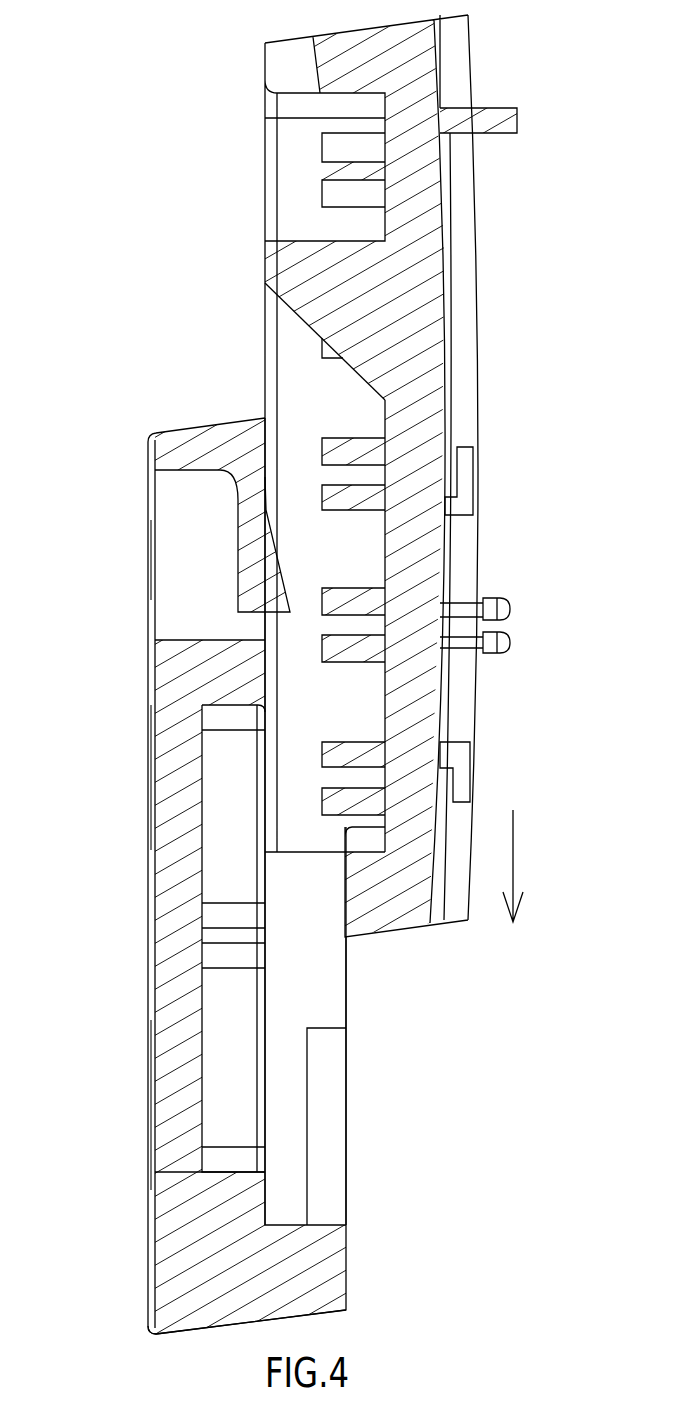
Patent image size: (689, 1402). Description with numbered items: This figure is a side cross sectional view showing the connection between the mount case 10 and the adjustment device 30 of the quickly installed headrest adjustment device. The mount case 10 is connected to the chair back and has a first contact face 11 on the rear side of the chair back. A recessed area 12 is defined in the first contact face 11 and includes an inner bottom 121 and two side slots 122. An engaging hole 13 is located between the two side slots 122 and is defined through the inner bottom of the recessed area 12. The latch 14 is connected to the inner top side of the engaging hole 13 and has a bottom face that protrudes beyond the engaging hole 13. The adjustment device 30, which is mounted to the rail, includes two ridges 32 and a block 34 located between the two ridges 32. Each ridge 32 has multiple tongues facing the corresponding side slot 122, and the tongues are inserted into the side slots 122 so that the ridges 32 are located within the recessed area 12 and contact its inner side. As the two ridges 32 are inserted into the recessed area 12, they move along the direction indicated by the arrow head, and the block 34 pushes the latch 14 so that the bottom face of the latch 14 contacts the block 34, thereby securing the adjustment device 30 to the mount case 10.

The mount case 10 is at (147, 914).
The first contact face 11 is at (347, 1268).
The recessed area 12 is at (312, 958).
The inner bottom 121 is at (268, 1180).
The side slots 122 is at (295, 1012).
The engaging hole 13 is at (172, 610).
The latch 14 is at (244, 549).
The adjustment device 30 is at (478, 298).
The ridges 32 is at (274, 174).
The block 34 is at (273, 263).